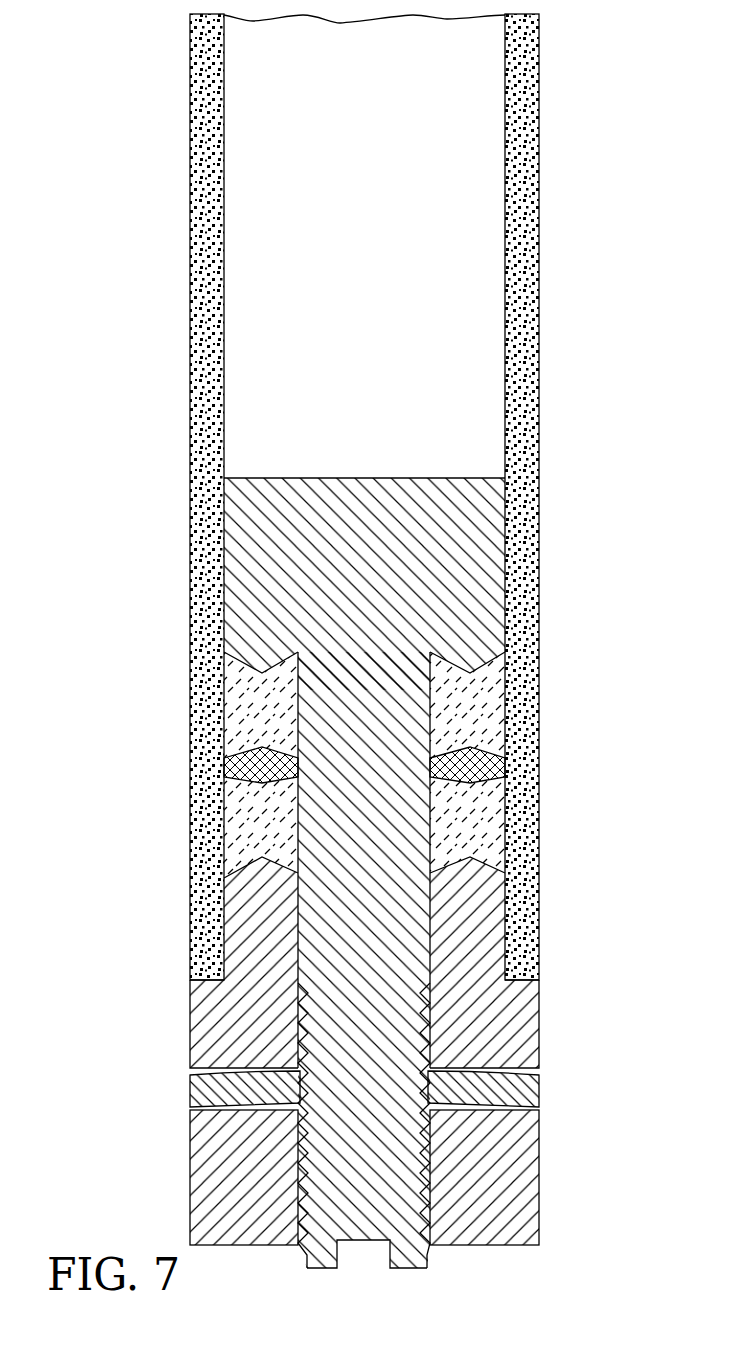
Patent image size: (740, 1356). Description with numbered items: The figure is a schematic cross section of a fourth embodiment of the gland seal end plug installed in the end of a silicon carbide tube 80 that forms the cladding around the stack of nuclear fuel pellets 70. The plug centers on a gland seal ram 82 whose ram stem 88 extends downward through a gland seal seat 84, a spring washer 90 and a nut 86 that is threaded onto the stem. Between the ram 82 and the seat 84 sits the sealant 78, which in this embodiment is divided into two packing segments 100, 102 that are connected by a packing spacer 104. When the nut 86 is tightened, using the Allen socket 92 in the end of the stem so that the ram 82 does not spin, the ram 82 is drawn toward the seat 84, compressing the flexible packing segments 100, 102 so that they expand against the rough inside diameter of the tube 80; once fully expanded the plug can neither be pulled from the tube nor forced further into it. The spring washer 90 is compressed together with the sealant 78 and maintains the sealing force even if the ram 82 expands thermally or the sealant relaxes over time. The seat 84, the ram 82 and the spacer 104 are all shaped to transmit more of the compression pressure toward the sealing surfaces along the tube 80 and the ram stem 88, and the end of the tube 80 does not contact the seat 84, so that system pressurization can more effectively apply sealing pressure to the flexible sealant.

The nuclear fuel pellets 70 is at (374, 253).
The silicon carbide tube 80 is at (539, 178).
The gland seal ram 82 is at (488, 567).
The gland seal ram stem 88 is at (418, 938).
The sealant 78 is at (503, 727).
The packing segment 100 is at (497, 676).
The packing spacer 104 is at (502, 767).
The packing segment 102 is at (500, 830).
The gland seal seat 84 is at (540, 1018).
The spring washer 90 is at (540, 1090).
The nut 86 is at (540, 1190).
The Allen socket 92 is at (357, 1258).